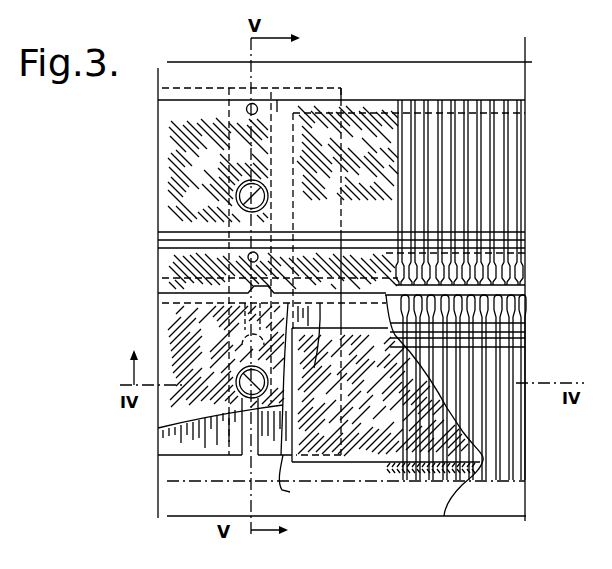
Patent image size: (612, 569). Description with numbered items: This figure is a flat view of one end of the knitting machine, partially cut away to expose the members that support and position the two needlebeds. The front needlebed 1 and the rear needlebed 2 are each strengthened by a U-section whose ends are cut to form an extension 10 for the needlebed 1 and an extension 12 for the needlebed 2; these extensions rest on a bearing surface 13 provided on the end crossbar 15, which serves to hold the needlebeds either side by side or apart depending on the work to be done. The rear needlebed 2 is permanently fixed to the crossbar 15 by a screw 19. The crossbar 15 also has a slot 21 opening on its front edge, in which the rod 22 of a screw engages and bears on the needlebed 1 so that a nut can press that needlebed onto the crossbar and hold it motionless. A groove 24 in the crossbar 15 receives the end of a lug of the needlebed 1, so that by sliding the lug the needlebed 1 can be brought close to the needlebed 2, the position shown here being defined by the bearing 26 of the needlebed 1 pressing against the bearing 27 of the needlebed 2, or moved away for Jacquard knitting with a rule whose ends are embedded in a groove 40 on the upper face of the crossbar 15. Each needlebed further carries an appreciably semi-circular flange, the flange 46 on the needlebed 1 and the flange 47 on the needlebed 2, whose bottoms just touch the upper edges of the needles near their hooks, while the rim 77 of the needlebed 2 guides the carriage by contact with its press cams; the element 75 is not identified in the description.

The needlebed 1 is at (498, 428).
The needlebed 2 is at (496, 167).
The extension 10 is at (362, 457).
The extension 12 is at (361, 113).
The bearing surface 13 is at (294, 481).
The crossbar 15 is at (163, 457).
The screw 19 is at (237, 197).
The slot 21 is at (240, 433).
The rod 22 is at (245, 373).
The groove 24 is at (262, 307).
The bearing 26 is at (177, 293).
The bearing 27 is at (197, 283).
The groove 40 is at (303, 379).
The flange 46 is at (496, 338).
The flange 47 is at (493, 245).
The lower support 75 is at (508, 478).
The rim 77 is at (511, 98).